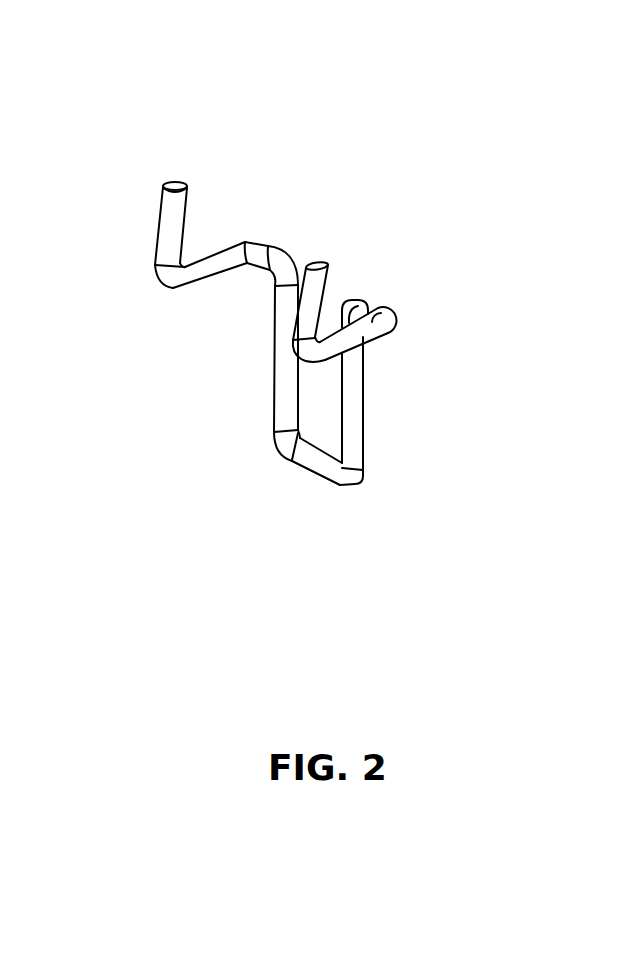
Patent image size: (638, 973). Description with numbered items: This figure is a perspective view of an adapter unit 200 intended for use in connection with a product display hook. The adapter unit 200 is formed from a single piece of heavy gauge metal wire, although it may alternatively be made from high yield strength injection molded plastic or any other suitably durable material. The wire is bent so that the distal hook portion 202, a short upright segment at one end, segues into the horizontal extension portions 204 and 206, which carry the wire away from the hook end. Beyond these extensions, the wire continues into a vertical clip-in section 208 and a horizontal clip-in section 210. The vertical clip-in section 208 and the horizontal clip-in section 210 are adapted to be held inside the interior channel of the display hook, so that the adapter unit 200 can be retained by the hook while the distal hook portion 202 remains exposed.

The adapter unit 200 is at (151, 120).
The distal hook portion 202 is at (168, 233).
The horizontal extension portion 204 is at (229, 253).
The horizontal extension portion 206 is at (370, 300).
The vertical clip-in section 208 is at (355, 423).
The horizontal clip-in section 210 is at (318, 476).